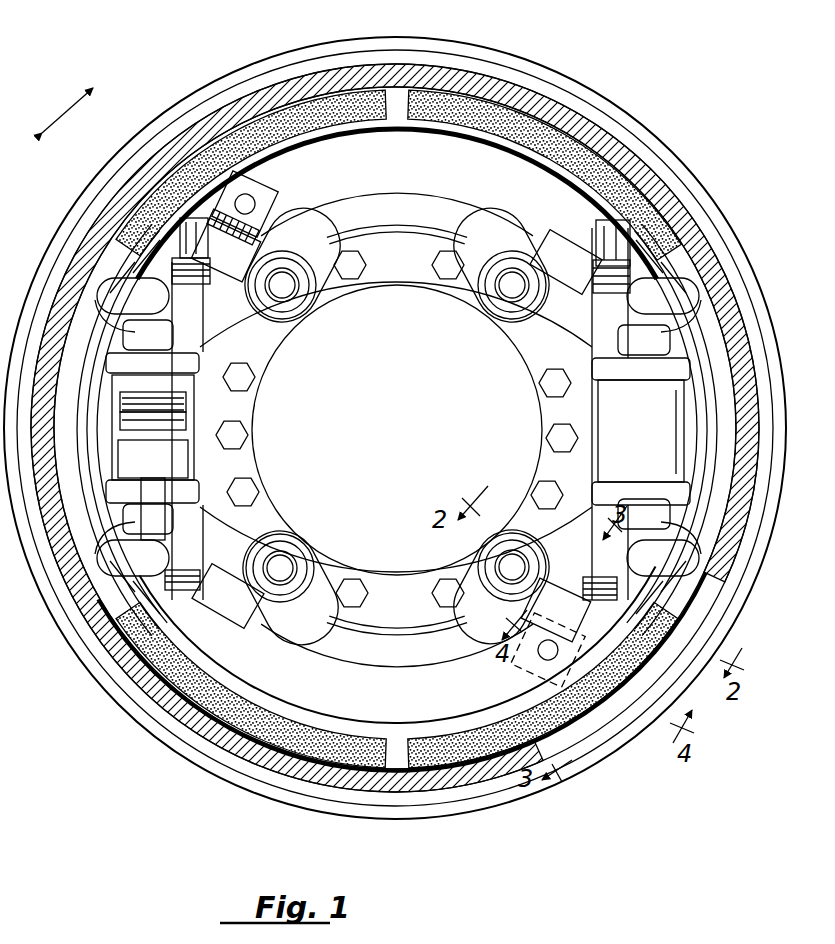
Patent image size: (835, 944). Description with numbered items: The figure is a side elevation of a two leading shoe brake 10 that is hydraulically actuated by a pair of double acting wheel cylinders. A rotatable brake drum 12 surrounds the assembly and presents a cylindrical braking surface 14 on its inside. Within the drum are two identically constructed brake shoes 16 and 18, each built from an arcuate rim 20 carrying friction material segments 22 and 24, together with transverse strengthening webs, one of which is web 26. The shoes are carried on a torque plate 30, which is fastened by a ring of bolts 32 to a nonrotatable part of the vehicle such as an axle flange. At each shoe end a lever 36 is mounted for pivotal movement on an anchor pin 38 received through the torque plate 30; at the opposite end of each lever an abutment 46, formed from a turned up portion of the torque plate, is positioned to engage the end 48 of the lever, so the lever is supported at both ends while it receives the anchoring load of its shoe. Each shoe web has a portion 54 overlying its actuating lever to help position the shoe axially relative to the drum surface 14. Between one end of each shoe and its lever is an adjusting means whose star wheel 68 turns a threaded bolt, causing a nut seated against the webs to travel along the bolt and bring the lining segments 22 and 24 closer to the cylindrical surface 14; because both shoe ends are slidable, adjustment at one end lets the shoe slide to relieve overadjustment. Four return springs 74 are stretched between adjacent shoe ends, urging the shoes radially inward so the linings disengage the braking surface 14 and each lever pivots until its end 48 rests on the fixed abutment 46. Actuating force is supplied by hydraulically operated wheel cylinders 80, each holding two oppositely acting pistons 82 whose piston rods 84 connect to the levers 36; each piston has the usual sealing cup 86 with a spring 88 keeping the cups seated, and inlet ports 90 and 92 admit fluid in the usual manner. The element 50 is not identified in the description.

The brake 10 is at (530, 58).
The brake drum 12 is at (185, 135).
The cylindrical braking surface 14 is at (283, 112).
The brake shoe 16 is at (433, 173).
The brake shoe 18 is at (402, 706).
The arcuate rim 20 is at (290, 735).
The friction material segment 22 is at (330, 106).
The friction material segment 24 is at (545, 130).
The transverse strengthening web 26 is at (392, 198).
The torque plate 30 is at (404, 565).
The bolts 32 is at (540, 490).
The lever 36 is at (267, 360).
The anchor pin 38 is at (285, 285).
The abutment 46 is at (100, 317).
The end of the lever 48 is at (135, 300).
The pivot pin 50 is at (282, 330).
The web portion 54 is at (660, 300).
The star wheel 68 is at (275, 198).
The return spring 74 is at (600, 262).
The wheel cylinder 80 is at (200, 463).
The piston 82 is at (127, 457).
The piston rod 84 is at (153, 333).
The sealing cup 86 is at (200, 440).
The spring 88 is at (127, 447).
The inlet port 90 is at (200, 415).
The inlet port 92 is at (123, 420).